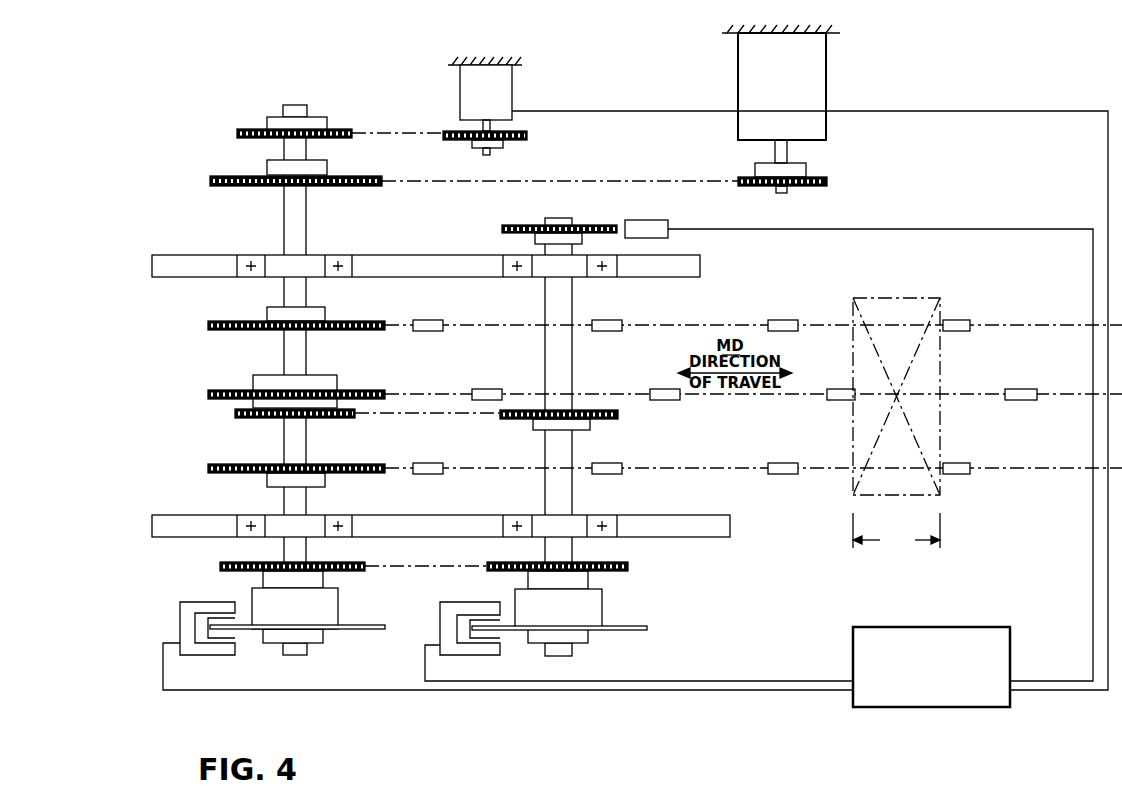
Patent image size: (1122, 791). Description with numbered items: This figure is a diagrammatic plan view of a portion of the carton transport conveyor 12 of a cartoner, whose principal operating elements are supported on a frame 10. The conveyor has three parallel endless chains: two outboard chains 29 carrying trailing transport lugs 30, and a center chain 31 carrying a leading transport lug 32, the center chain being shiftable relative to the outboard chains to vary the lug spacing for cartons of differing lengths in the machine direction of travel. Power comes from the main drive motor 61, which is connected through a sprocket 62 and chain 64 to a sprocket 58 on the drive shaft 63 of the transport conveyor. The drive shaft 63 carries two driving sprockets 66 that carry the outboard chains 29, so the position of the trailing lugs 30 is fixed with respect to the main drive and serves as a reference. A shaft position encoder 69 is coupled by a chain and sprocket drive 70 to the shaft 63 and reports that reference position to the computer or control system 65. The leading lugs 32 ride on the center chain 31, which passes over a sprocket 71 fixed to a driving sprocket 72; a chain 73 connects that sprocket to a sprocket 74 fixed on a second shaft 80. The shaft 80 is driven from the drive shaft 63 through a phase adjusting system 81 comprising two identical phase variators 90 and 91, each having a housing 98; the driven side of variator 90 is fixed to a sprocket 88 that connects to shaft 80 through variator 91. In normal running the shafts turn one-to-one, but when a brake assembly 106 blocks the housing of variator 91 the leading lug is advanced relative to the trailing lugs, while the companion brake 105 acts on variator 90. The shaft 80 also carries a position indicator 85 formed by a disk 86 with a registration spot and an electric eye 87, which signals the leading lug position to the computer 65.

The frame 10 is at (152, 266).
The carton transport conveyor 12 is at (136, 395).
The outboard chains 29 is at (1048, 322).
The trailing transport lugs 30 is at (786, 320).
The center chain 31 is at (1072, 392).
The leading transport lug 32 is at (830, 401).
The sprocket 58 is at (210, 180).
The main drive motor 61 is at (790, 85).
The sprocket 62 is at (829, 182).
The drive shaft 63 is at (307, 222).
The chain 64 is at (606, 178).
The computer or control system 65 is at (921, 708).
The driving sprockets 66 is at (208, 325).
The shaft position encoder 69 is at (494, 100).
The chain and sprocket drive 70 is at (430, 126).
The sprocket 71 is at (208, 394).
The driving sprocket 72 is at (238, 418).
The chain 73 is at (432, 418).
The sprocket 74 is at (622, 419).
The shaft 80 is at (574, 366).
The phase adjusting system 81 is at (165, 596).
The position indicator 85 is at (636, 204).
The disk 86 is at (529, 225).
The electric eye 87 is at (660, 228).
The sprocket 88 is at (220, 567).
The phase variator 90 is at (340, 607).
The phase variator 91 is at (604, 612).
The housing 98 is at (300, 618).
The position sensor 105 is at (188, 660).
The brake assembly 106 is at (488, 604).